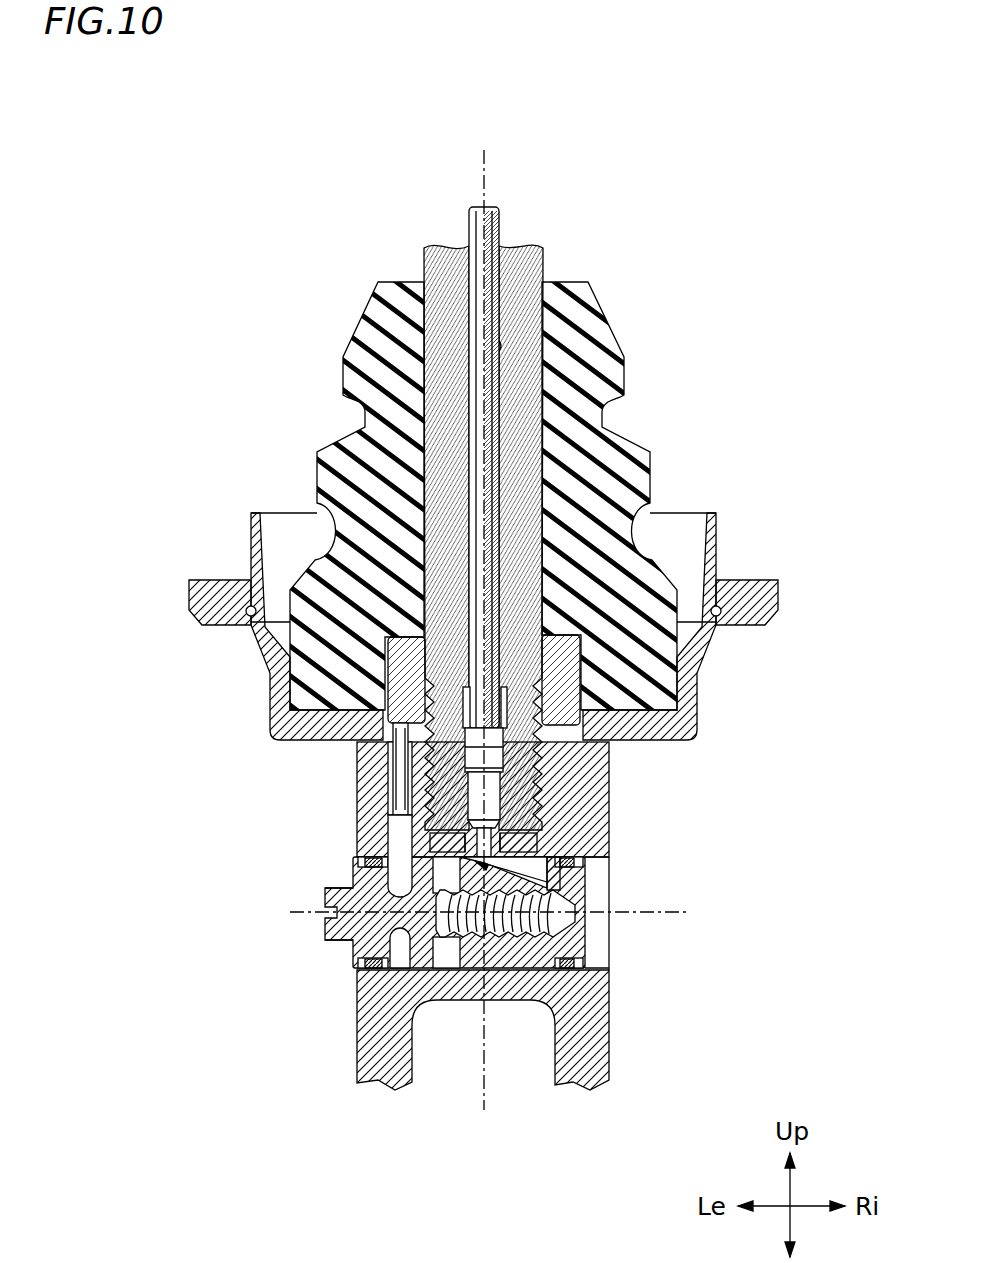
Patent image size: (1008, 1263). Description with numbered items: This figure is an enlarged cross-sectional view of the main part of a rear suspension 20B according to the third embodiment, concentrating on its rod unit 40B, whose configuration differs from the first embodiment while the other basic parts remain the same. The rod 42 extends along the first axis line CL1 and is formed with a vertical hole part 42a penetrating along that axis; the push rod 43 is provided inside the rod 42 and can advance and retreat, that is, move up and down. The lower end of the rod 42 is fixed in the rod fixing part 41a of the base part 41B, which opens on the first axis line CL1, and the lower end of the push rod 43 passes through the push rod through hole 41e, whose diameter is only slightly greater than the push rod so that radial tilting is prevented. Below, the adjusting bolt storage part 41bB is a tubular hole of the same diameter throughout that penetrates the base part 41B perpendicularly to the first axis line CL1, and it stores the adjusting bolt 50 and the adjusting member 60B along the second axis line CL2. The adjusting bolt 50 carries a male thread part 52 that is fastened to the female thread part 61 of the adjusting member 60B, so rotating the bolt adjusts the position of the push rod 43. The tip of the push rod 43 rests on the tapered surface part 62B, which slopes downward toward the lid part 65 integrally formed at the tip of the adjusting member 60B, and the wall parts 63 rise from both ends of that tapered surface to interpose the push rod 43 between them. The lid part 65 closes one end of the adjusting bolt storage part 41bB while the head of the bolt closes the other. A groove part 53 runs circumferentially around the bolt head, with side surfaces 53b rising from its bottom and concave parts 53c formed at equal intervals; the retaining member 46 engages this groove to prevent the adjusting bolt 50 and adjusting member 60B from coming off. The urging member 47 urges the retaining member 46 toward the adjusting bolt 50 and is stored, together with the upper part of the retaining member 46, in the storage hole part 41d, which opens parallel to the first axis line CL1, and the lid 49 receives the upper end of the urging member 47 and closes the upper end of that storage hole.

The rod unit 40B is at (238, 247).
The rear suspension 20B is at (468, 555).
The first axis line CL1 is at (490, 163).
The second axis line CL2 is at (688, 908).
The push rod 43 is at (499, 222).
The rod 42 is at (543, 268).
The vertical hole part 42a is at (498, 350).
The lid 49 is at (400, 664).
The urging member 47 is at (395, 757).
The storage hole part 41d is at (400, 784).
The retaining member 46 is at (395, 855).
The rod fixing part 41a is at (612, 757).
The push rod through hole 41e is at (487, 838).
The wall parts 63 is at (537, 845).
The tapered surface part 62B is at (590, 870).
The lid part 65 is at (600, 925).
The adjusting member 60B is at (588, 945).
The adjusting bolt storage part 41bB is at (600, 968).
The adjusting bolt 50 is at (322, 928).
The concave parts 53c is at (362, 963).
The side surfaces 53b is at (397, 936).
The groove part 53 is at (326, 973).
The base part 41B is at (357, 1047).
The male thread part 52 is at (505, 971).
The female thread part 61 is at (520, 940).